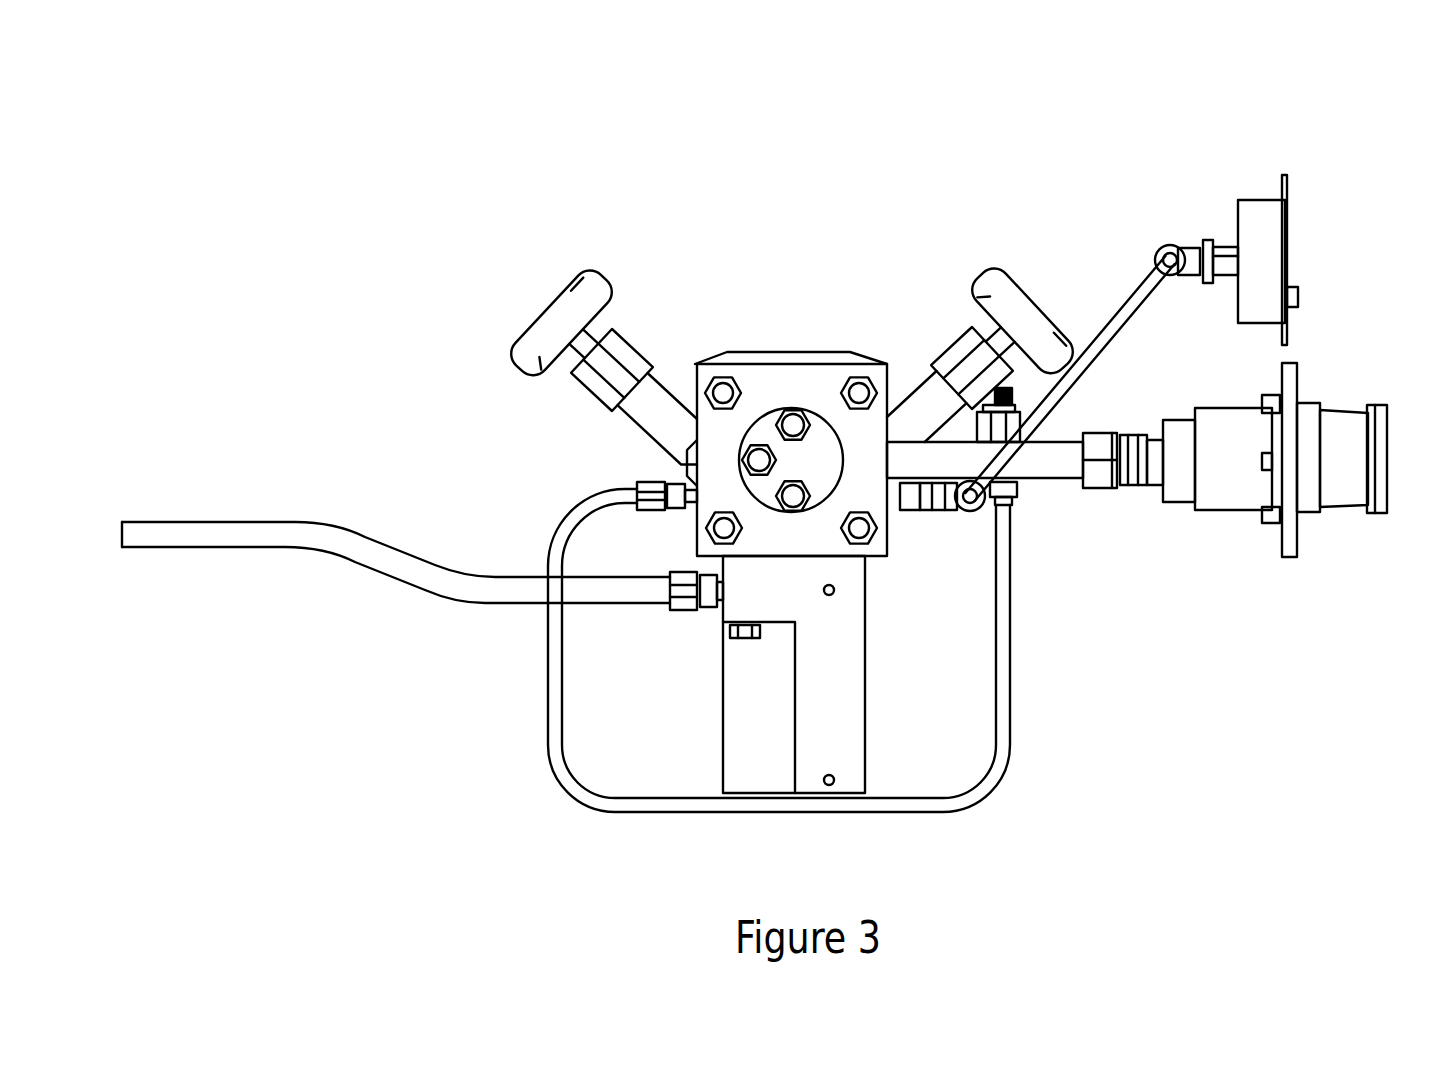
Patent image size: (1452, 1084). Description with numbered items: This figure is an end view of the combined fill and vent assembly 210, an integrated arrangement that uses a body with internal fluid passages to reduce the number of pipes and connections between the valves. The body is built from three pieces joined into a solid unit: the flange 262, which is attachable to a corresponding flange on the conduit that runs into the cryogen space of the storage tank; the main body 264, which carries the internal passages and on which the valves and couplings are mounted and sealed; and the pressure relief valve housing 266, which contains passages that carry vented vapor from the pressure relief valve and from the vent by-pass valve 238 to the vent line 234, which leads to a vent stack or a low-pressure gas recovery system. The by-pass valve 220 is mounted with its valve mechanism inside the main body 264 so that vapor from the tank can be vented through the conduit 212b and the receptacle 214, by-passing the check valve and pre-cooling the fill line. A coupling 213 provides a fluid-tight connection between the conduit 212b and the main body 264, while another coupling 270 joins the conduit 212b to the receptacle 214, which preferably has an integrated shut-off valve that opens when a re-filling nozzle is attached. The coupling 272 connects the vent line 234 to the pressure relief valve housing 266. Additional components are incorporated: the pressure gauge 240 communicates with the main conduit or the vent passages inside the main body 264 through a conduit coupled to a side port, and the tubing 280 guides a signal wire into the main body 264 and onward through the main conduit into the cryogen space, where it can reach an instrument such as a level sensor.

The combined fill and vent assembly 210 is at (627, 117).
The by-pass valve 220 is at (567, 303).
The main body 264 is at (765, 390).
The flange 262 is at (798, 357).
The vent by-pass valve 238 is at (1012, 295).
The pressure gauge 240 is at (1268, 235).
The receptacle 214 is at (1340, 440).
The tubing 280 is at (575, 505).
The vent line 234 is at (527, 590).
The coupling 272 is at (682, 597).
The conduit 212b is at (1055, 643).
The coupling 213 is at (1053, 717).
The pressure relief valve housing 266 is at (1055, 793).
The coupling 270 is at (1198, 638).